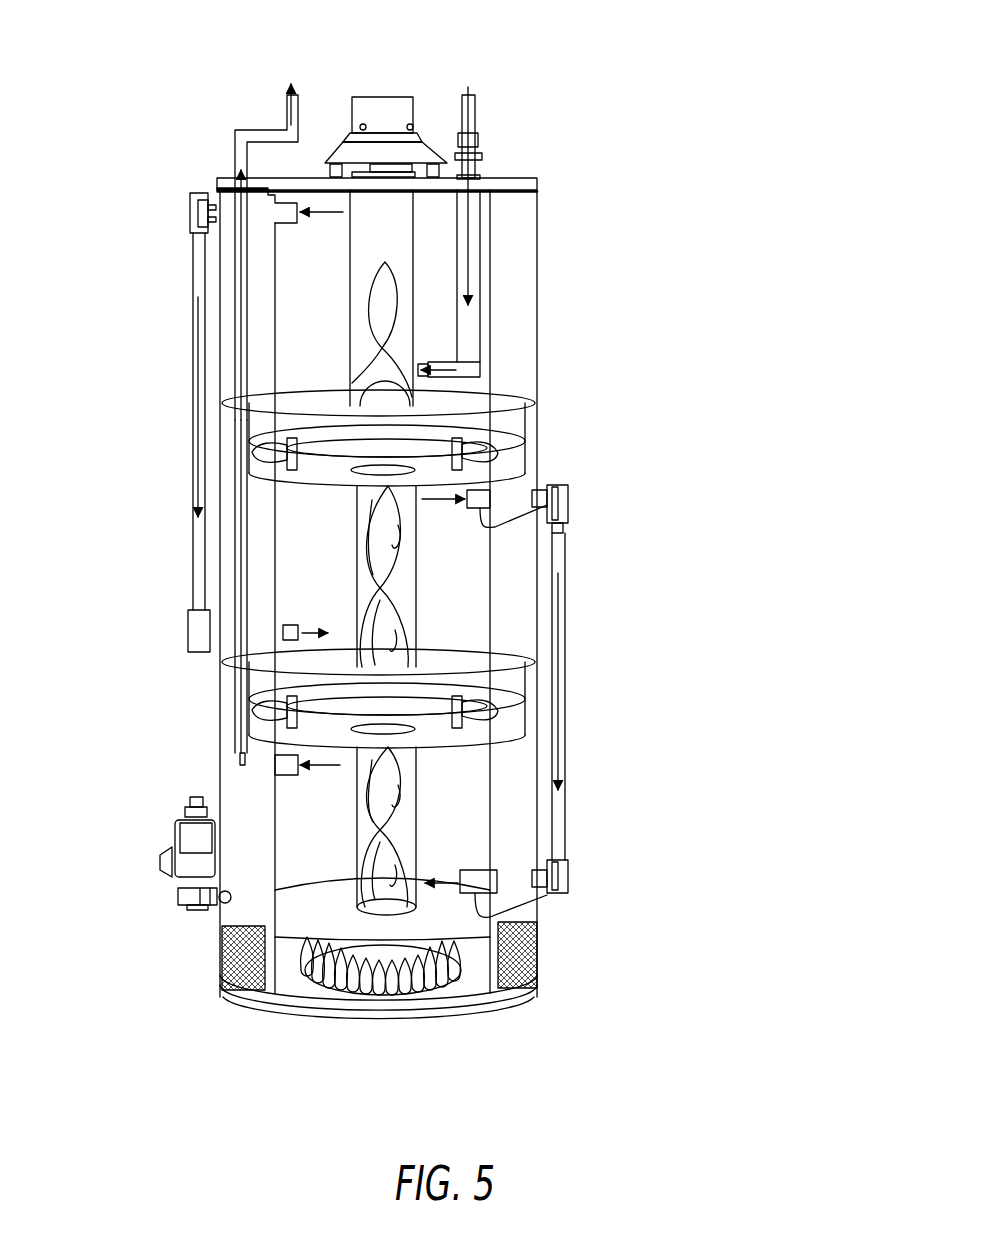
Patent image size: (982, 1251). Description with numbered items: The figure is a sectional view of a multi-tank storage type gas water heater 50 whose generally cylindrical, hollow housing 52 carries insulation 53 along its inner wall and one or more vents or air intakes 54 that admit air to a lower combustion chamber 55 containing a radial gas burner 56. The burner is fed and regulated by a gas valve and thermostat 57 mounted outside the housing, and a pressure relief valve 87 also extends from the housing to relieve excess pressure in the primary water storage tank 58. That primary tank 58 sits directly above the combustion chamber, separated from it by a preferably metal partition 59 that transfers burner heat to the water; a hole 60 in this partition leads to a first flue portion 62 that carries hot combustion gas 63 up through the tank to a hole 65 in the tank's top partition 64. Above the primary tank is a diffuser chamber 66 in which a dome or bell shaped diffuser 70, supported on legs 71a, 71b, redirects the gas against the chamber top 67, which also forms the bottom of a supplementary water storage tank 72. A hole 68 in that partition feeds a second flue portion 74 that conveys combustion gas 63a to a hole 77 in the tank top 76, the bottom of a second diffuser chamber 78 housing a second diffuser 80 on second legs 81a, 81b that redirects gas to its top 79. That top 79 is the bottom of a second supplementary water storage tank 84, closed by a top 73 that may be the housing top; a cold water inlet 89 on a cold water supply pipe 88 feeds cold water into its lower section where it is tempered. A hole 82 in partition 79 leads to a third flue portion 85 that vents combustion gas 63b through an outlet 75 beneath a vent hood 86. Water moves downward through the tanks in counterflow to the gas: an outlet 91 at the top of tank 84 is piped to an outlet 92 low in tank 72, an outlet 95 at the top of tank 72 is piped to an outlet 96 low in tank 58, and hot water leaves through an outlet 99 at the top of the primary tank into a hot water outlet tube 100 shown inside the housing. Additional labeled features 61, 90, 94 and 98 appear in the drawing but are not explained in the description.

The multi-tank storage type gas water heater 50 is at (723, 82).
The housing 52 is at (515, 247).
The insulation 53 is at (525, 693).
The vents or air intakes 54 is at (240, 957).
The lower chamber or combustion chamber 55 is at (290, 983).
The radial gas burner 56 is at (430, 965).
The gas valve and thermostat 57 is at (193, 835).
The primary water storage tank 58 is at (467, 816).
The partition 59 is at (305, 907).
The hole or cutout 60 is at (410, 902).
The lower screw section 61 is at (470, 867).
The first flue portion or tube 62 is at (418, 793).
The hot combustion gas or exhaust 63 is at (384, 773).
The combustion gas 63a is at (390, 583).
The hot combustion gas 63b is at (384, 322).
The top wall or partition 64 is at (253, 740).
The hole or cutout 65 is at (193, 802).
The diffuser chamber 66 is at (258, 687).
The top wall or partition 67 is at (478, 663).
The hole or cutout 68 is at (420, 645).
The diffuser or baffle 70 is at (527, 665).
The leg or support 71a is at (262, 712).
The leg or support 71b is at (498, 708).
The supplementary water storage tank 72 is at (465, 577).
The top 73 is at (507, 182).
The second flue portion or tube 74 is at (357, 555).
The outlet 75 is at (370, 167).
The top or partition 76 is at (493, 460).
The hole 77 is at (358, 475).
The second diffuser chamber 78 is at (527, 442).
The top wall or partition 79 is at (490, 410).
The second diffuser or baffle 80 is at (286, 450).
The second leg or support 81a is at (286, 458).
The second leg or support 81b is at (500, 468).
The hole 82 is at (400, 347).
The second supplementary water storage tank 84 is at (288, 315).
The third flue portion 85 is at (414, 252).
The vent hood 86 is at (395, 112).
The pressure relief valve 87 is at (188, 900).
The cold water supply pipe 88 is at (477, 123).
The cold water inlet 89 is at (458, 355).
The recirculation loop 90 is at (193, 300).
The outlet 91 is at (287, 212).
The outlet 92 is at (190, 625).
The right side pipe 94 is at (557, 572).
The outlet 95 is at (568, 502).
The outlet 96 is at (476, 894).
The return pipe lower section 98 is at (240, 525).
The outlet 99 is at (286, 775).
The hot water outlet tube 100 is at (242, 145).